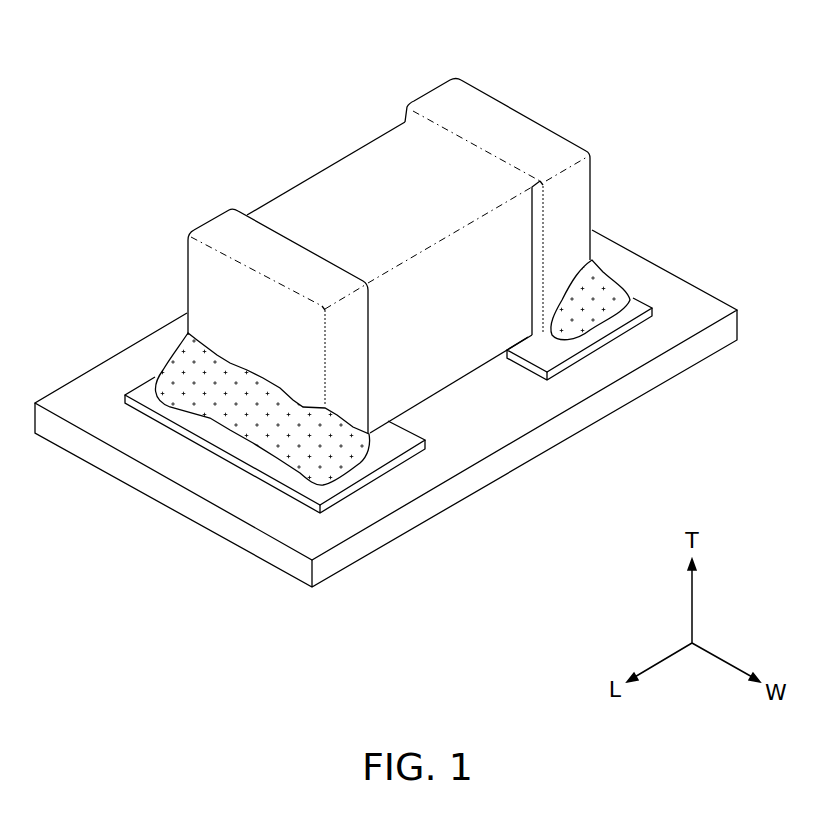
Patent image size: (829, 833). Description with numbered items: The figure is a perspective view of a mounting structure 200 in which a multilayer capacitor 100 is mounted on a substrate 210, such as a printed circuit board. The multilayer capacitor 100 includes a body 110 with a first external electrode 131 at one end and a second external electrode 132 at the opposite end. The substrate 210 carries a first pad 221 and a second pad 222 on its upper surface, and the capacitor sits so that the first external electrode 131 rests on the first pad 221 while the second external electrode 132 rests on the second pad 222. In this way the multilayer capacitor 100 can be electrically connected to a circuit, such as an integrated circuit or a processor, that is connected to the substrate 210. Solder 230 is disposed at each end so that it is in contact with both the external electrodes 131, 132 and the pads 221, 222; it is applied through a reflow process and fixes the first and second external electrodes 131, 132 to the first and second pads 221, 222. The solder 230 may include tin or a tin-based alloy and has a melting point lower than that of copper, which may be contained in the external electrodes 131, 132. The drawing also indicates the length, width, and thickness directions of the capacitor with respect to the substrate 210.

The mounting structure 200 is at (181, 32).
The multilayer capacitor 100 is at (360, 133).
The body 110 is at (305, 200).
The first external electrode 131 is at (216, 230).
The second external electrode 132 is at (435, 100).
The substrate 210 is at (498, 462).
The first pad 221 is at (397, 445).
The second pad 222 is at (548, 355).
The solder 230 is at (333, 463).